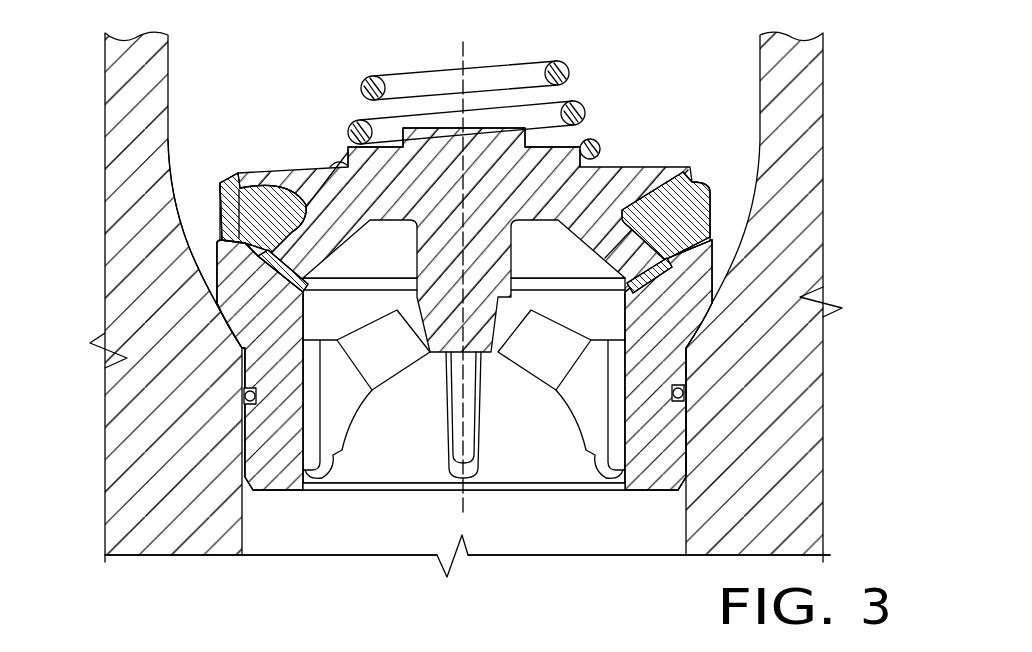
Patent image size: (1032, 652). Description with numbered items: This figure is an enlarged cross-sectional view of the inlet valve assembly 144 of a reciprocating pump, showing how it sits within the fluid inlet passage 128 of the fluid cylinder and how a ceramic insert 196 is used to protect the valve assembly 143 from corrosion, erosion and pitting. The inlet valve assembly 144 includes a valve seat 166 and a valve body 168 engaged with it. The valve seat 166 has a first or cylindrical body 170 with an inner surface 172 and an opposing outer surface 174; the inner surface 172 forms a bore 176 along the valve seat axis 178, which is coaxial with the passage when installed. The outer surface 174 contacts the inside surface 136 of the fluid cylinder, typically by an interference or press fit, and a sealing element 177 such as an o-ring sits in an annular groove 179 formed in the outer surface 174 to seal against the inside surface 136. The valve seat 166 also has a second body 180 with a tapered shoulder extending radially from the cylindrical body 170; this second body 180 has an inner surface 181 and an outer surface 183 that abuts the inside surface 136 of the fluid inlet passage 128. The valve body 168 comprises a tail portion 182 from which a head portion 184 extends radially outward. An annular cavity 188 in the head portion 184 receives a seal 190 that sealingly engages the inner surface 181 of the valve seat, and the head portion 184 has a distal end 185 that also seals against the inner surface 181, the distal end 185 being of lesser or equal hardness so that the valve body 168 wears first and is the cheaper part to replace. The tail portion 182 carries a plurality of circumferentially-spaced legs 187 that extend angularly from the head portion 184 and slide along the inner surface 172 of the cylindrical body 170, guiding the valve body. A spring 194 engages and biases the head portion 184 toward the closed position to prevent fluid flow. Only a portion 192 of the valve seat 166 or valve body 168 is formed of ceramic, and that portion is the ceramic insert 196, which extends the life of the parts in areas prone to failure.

The fluid inlet passage 128 is at (243, 520).
The inside surface 136 is at (685, 535).
The valve assembly 143 is at (748, 342).
The inlet valve assembly 144 is at (637, 165).
The valve seat 166 is at (648, 440).
The valve body 168 is at (655, 180).
The cylindrical body 170 is at (275, 467).
The inner surface 172 is at (605, 452).
The outer surface 174 is at (685, 457).
The bore 176 is at (305, 323).
The sealing element 177 is at (244, 395).
The valve seat axis 178 is at (467, 497).
The annular groove 179 is at (678, 388).
The second body 180 is at (230, 307).
The inner surface 181 is at (220, 213).
The tail portion 182 is at (512, 243).
The outer surface 183 is at (240, 313).
The head portion 184 is at (697, 200).
The distal end 185 is at (298, 256).
The legs 187 is at (340, 400).
The annular cavity 188 is at (270, 192).
The seal 190 is at (234, 173).
The portion 192 is at (262, 270).
The spring 194 is at (398, 74).
The insert 196 is at (243, 343).